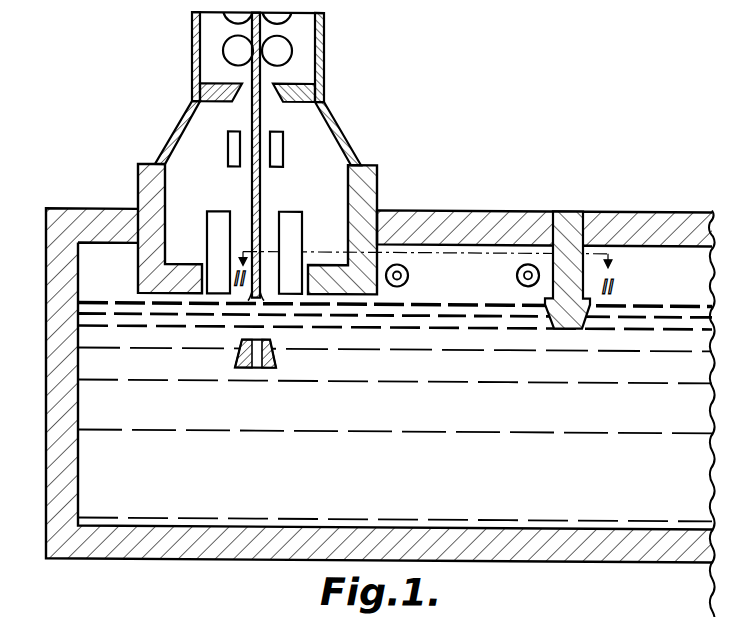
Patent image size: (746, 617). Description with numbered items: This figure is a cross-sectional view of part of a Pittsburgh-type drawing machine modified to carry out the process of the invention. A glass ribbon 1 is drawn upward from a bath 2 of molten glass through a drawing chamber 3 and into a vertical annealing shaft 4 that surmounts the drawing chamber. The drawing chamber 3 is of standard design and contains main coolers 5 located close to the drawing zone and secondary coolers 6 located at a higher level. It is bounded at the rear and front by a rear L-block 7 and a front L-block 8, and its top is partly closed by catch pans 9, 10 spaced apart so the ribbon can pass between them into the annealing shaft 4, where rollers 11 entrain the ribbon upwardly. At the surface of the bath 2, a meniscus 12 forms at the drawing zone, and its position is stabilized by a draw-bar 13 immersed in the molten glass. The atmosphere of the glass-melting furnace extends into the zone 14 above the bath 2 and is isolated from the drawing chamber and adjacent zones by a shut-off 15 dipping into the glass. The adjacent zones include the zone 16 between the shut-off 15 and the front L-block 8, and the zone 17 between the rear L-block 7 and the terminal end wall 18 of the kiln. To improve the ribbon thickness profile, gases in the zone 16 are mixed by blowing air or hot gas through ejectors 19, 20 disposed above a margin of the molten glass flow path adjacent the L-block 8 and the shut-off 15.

The glass ribbon 1 is at (251, 188).
The bath of molten glass 2 is at (356, 422).
The drawing chamber 3 is at (198, 187).
The annealing shaft 4 is at (219, 43).
The main coolers 5 is at (218, 235).
The secondary coolers 6 is at (228, 143).
The rear L-block 7 is at (148, 180).
The front L-block 8 is at (378, 184).
The catch pan 9 is at (215, 86).
The catch pan 10 is at (318, 70).
The rollers 11 is at (283, 48).
The meniscus 12 is at (259, 297).
The draw-bar 13 is at (275, 349).
The zone 14 is at (674, 287).
The shut-off 15 is at (563, 236).
The zone 16 is at (472, 280).
The zone 17 is at (114, 277).
The terminal end wall 18 is at (62, 298).
The ejector 19 is at (408, 272).
The ejector 20 is at (517, 273).